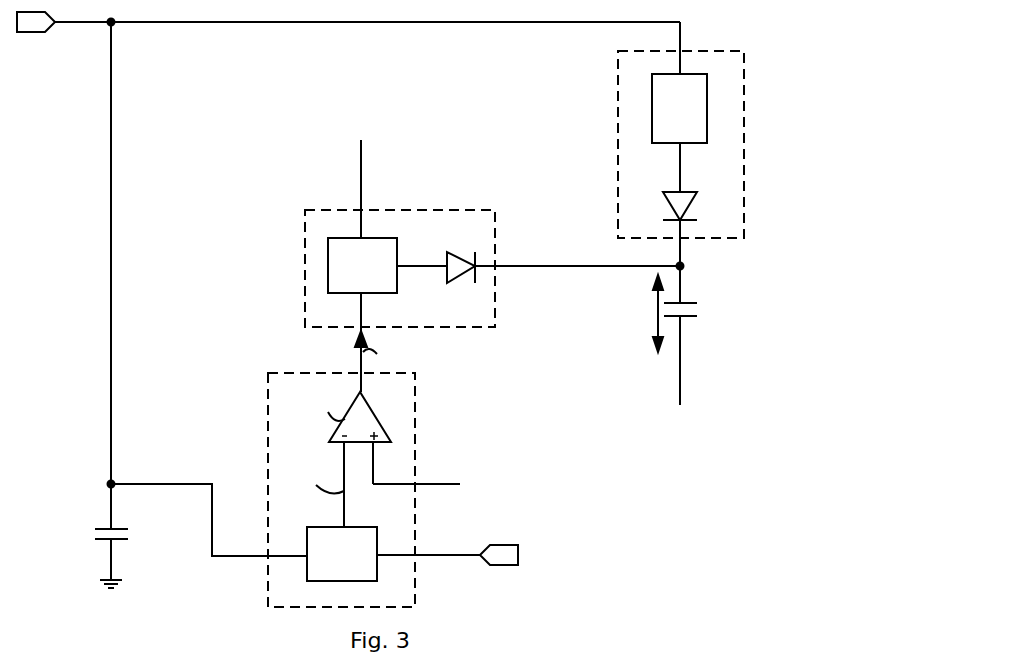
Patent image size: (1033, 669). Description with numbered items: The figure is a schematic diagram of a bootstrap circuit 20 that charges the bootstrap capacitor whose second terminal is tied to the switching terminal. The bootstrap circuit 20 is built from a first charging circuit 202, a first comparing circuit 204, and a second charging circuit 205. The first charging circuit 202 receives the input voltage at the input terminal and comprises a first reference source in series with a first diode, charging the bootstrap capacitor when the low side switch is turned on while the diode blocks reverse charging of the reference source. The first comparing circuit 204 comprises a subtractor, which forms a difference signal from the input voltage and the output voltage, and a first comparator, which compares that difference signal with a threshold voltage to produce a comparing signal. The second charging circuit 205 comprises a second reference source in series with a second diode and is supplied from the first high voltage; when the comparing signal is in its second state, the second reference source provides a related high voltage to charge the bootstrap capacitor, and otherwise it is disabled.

The bootstrap circuit 20 is at (380, 309).
The first charging circuit 202 is at (618, 186).
The first comparing circuit 204 is at (268, 412).
The second charging circuit 205 is at (441, 210).